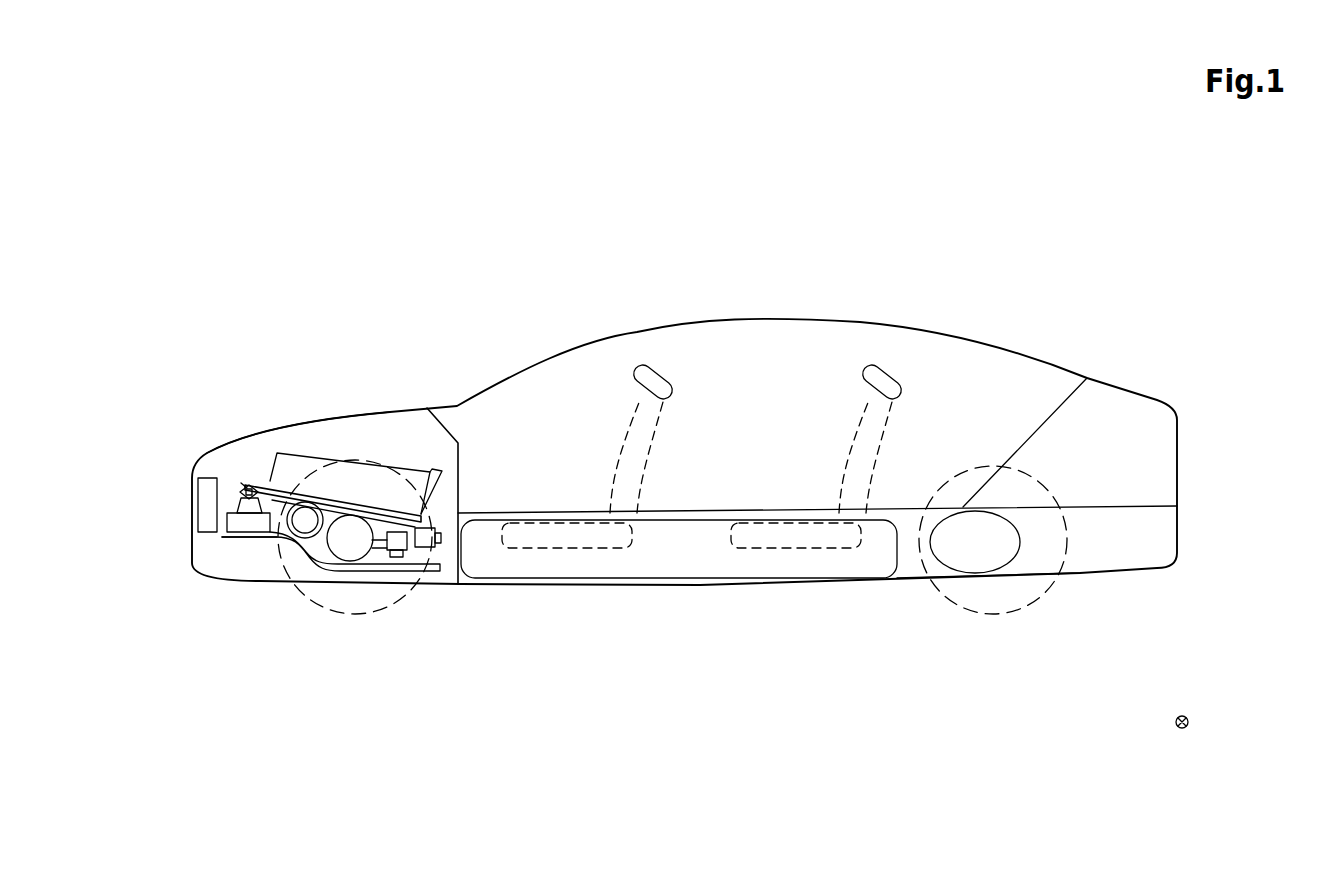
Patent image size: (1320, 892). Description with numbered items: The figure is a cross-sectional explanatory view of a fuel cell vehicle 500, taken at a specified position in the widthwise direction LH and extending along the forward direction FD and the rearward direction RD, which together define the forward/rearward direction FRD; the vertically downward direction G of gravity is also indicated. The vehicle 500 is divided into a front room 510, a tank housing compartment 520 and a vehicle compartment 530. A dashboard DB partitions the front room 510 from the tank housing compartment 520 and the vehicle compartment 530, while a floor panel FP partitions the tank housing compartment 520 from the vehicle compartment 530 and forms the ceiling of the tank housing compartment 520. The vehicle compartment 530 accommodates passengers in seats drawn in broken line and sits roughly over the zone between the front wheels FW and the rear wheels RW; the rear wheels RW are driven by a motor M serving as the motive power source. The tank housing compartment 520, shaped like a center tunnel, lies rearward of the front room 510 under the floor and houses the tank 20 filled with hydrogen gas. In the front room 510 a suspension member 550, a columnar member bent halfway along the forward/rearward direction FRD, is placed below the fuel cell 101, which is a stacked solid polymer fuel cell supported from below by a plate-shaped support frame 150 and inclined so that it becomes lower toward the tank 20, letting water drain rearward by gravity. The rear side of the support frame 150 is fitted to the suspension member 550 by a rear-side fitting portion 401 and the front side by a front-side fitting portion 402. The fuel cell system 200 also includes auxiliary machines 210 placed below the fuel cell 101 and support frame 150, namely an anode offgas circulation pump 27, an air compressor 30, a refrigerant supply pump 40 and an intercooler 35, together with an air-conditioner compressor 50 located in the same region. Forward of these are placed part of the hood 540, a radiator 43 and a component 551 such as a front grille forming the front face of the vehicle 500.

The fuel cell vehicle 500 is at (880, 322).
The front room 510 is at (427, 444).
The tank housing compartment 520 is at (907, 568).
The vehicle compartment 530 is at (788, 361).
The hood 540 is at (330, 421).
The suspension member 550 is at (227, 533).
The component forming a front face 551 is at (198, 505).
The tank 20 is at (695, 566).
The anode offgas circulation pump 27 is at (420, 552).
The air compressor 30 is at (350, 548).
The intercooler 35 is at (397, 553).
The refrigerant supply pump 40 is at (296, 545).
The radiator 43 is at (243, 488).
The air-conditioner compressor 50 is at (300, 522).
The fuel cell 101 is at (329, 490).
The support frame 150 is at (271, 480).
The fuel cell system 200 is at (348, 452).
The auxiliary machines 210 is at (455, 690).
The rear-side fitting portion 401 is at (436, 541).
The front-side fitting portion 402 is at (243, 486).
The dashboard DB is at (453, 435).
The floor panel FP is at (686, 513).
The front wheels FW is at (330, 617).
The rear wheels RW is at (1023, 610).
The motor M is at (1020, 547).
The forward/rearward direction FRD is at (1031, 736).
The forward direction FD is at (1176, 722).
The rearward direction RD is at (1188, 722).
The widthwise direction LH is at (1184, 706).
The vertically downward direction G is at (1182, 728).